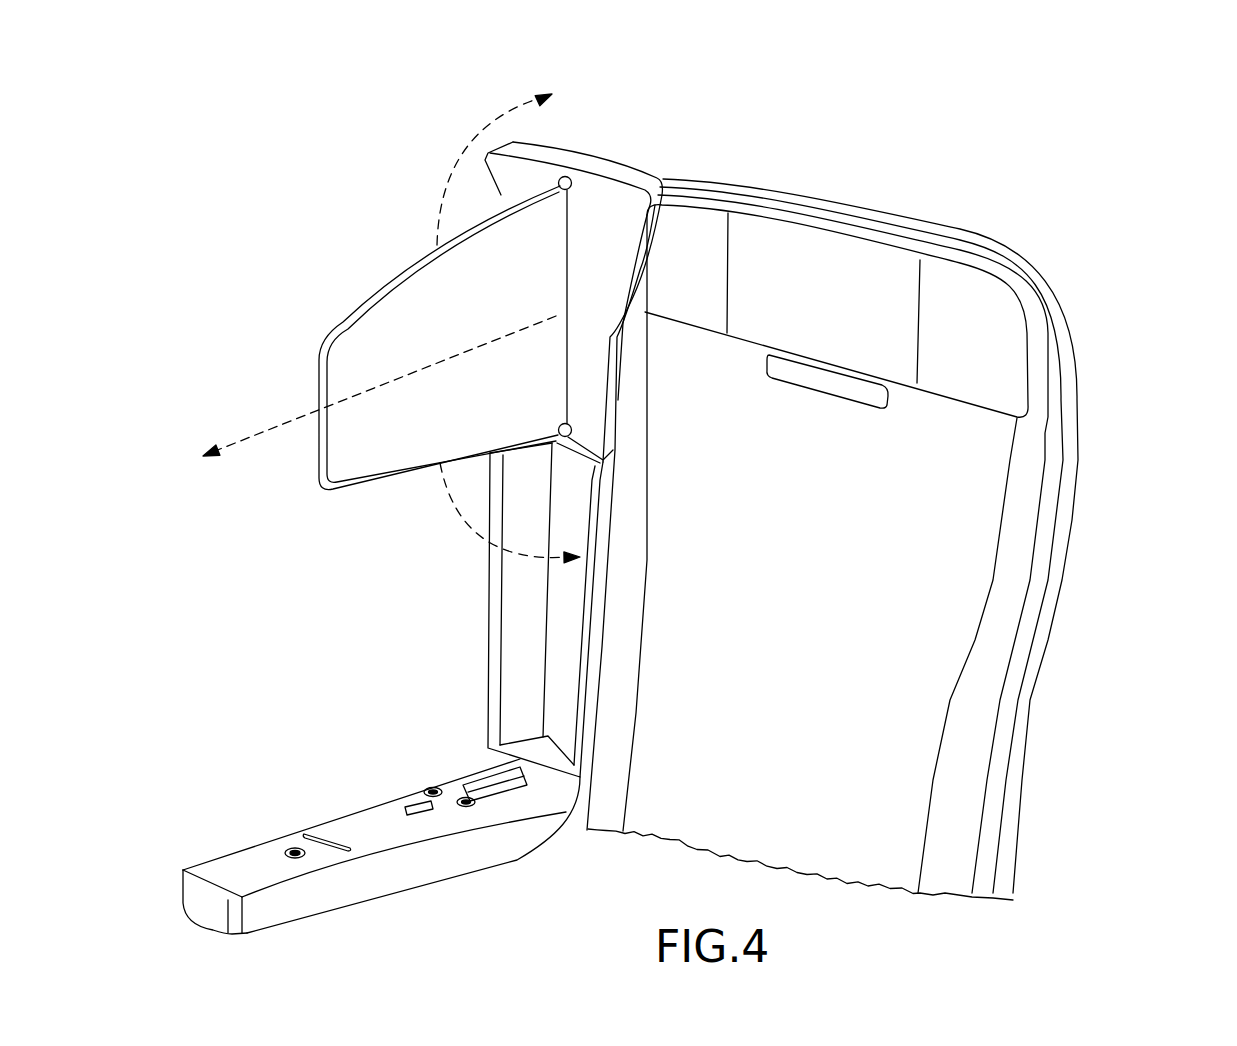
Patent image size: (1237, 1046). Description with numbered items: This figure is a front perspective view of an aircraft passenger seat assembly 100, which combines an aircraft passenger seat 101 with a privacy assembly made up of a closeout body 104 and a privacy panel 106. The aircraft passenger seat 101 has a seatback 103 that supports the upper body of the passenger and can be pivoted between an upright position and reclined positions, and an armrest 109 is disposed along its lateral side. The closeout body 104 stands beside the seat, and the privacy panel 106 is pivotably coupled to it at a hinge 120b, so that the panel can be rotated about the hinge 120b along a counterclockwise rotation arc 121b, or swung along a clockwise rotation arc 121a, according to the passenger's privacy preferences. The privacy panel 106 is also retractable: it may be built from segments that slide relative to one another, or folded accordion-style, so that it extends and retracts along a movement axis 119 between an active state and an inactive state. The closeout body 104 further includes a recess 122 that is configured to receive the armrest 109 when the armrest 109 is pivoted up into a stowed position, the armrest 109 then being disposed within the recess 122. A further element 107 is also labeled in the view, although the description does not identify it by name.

The aircraft passenger seat assembly 100 is at (298, 77).
The aircraft passenger seat 101 is at (1140, 333).
The seatback 103 is at (957, 557).
The closeout body 104 is at (600, 197).
The privacy panel 106 is at (347, 353).
The connector 107 is at (498, 779).
The armrest 109 is at (360, 827).
The movement axis 119 is at (275, 430).
The hinge 120b is at (567, 176).
The clockwise rotation arc 121a is at (468, 147).
The counterclockwise rotation arc 121b is at (482, 535).
The recess 122 is at (513, 665).